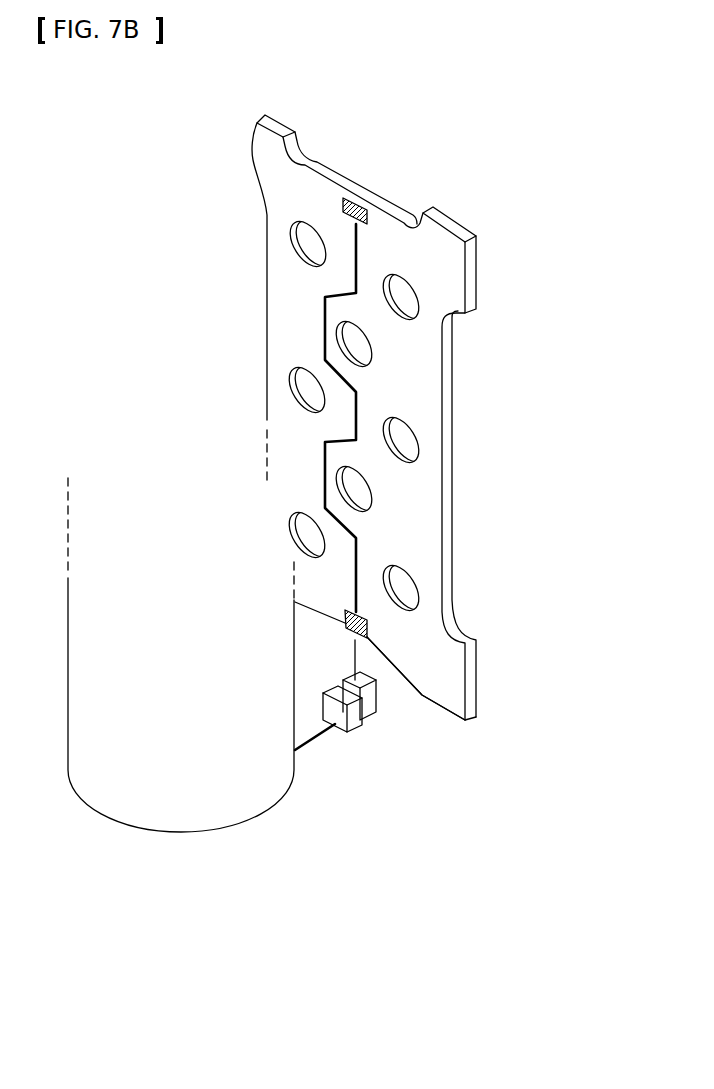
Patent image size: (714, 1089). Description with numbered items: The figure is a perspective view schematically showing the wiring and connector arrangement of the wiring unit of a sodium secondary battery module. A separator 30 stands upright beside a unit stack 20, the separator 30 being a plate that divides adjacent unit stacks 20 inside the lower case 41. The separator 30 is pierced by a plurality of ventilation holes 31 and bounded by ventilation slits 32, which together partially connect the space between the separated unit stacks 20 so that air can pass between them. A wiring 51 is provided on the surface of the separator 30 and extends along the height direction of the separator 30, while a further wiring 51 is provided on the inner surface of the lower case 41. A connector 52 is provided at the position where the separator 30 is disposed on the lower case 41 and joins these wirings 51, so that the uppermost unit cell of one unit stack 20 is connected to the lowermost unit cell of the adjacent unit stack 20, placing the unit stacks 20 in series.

The unit stack 20 is at (113, 829).
The separator 30 is at (375, 415).
The ventilation holes 31 is at (357, 343).
The ventilation slits 32 is at (401, 208).
The lower case 41 is at (428, 752).
The wiring 51 is at (352, 236).
The connector 52 is at (362, 726).